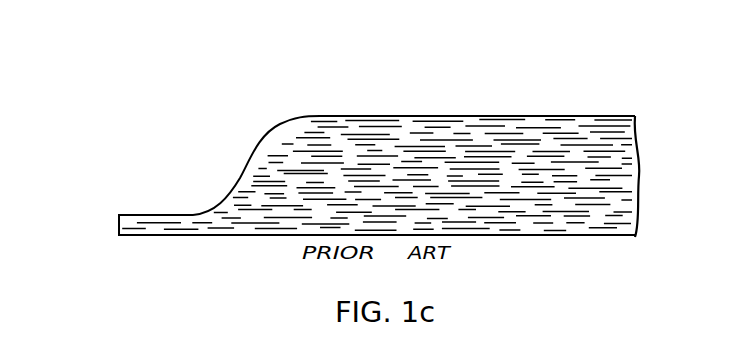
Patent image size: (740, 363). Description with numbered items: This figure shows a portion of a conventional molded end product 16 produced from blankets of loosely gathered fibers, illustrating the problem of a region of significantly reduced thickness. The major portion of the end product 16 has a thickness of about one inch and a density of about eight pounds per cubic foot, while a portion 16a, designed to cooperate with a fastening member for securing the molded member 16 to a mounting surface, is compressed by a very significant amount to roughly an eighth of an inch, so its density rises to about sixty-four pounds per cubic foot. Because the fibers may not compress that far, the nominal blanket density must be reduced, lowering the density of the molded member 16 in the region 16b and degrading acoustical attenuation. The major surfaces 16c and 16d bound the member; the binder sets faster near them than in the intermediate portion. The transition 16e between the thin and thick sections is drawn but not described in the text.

The end product 16 is at (186, 122).
The portion of end product 16a is at (142, 237).
The region 16b is at (405, 113).
The major surface 16c is at (587, 115).
The major surface 16d is at (245, 237).
The curved transition portion 16e is at (280, 157).